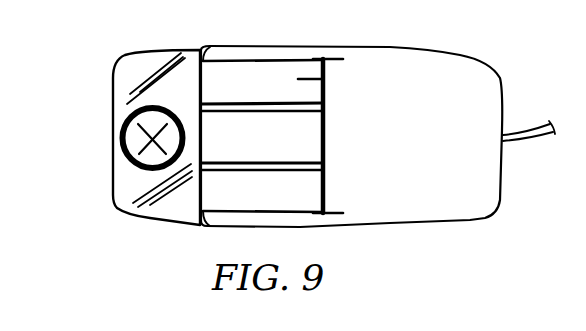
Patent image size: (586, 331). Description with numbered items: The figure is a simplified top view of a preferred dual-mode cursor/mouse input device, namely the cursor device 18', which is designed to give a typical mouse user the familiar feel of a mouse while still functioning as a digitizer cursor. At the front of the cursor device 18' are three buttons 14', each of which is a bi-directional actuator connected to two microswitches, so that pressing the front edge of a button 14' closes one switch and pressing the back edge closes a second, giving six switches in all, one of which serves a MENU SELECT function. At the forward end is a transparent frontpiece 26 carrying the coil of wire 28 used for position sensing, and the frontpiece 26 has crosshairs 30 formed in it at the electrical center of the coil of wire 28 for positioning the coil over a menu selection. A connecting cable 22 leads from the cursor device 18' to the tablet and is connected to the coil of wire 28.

The buttons 14' is at (297, 136).
The cursor device 18' is at (375, 136).
The connecting cable 22 is at (519, 139).
The transparent frontpiece 26 is at (173, 208).
The coil of wire 28 is at (158, 175).
The crosshairs 30 is at (166, 131).